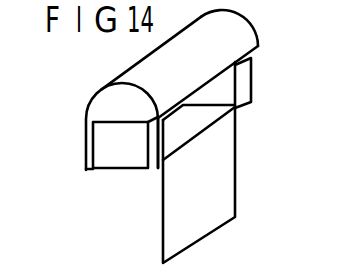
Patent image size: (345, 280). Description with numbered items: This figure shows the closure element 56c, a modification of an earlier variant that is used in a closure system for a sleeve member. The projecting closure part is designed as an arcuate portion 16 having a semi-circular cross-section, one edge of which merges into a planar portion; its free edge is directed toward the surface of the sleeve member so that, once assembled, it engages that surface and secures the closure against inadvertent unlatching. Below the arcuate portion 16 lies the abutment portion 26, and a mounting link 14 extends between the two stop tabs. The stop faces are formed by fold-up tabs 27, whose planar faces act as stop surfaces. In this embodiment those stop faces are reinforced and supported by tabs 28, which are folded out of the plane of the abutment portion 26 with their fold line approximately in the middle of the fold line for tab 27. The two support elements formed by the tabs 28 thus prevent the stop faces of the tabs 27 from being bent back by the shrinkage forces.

The mounting link 14 is at (228, 183).
The arcuate portion 16 is at (258, 33).
The abutment portion 26 is at (208, 117).
The tab 27 is at (153, 152).
The tab 28 is at (108, 152).
The closure element 56c is at (112, 71).